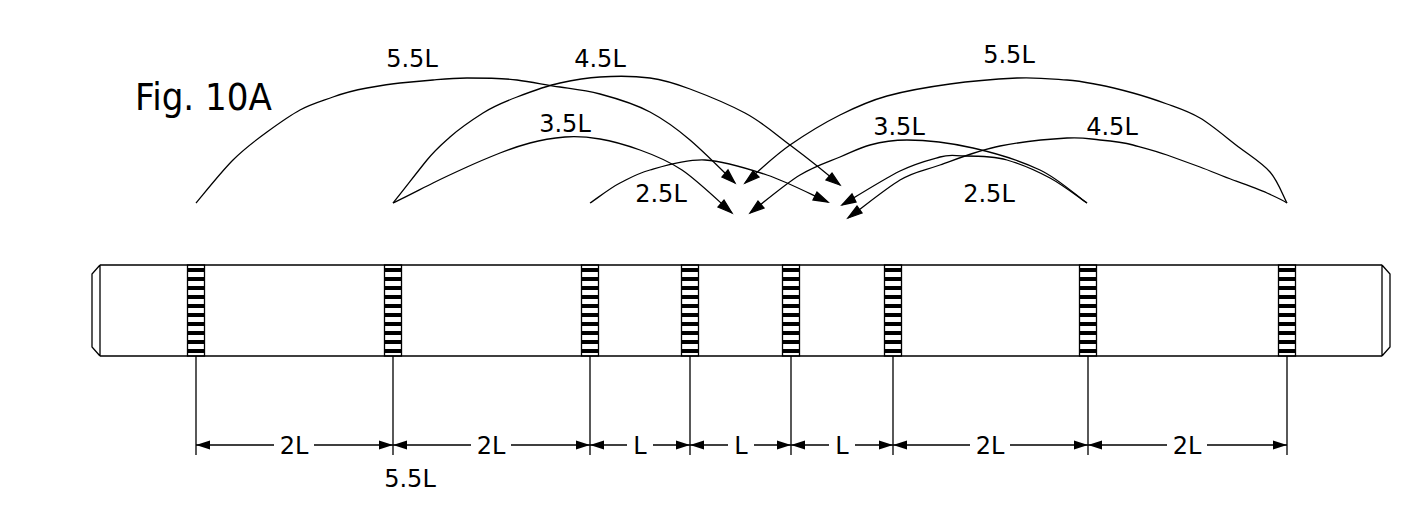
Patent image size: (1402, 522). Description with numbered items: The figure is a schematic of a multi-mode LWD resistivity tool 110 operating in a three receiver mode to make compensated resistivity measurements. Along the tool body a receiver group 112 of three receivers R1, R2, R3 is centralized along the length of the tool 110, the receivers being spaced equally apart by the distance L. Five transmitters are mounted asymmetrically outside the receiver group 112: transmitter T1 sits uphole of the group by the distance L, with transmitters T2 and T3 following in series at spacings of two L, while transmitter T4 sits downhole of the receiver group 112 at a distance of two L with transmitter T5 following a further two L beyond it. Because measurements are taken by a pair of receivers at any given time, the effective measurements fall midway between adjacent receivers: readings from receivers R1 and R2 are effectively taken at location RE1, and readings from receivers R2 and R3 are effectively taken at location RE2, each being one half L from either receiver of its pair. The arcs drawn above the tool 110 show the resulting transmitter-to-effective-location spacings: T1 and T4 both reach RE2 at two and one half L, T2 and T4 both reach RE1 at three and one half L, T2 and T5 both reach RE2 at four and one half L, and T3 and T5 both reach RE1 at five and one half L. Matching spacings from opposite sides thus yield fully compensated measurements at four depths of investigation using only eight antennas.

The multi-mode resistivity tool 110 is at (592, 458).
The receiver group 112 is at (792, 356).
The transmitter T1 is at (590, 203).
The transmitter T2 is at (393, 203).
The transmitter T3 is at (196, 203).
The transmitter T4 is at (1088, 203).
The transmitter T5 is at (1287, 203).
The receiver R1 is at (690, 205).
The receiver R2 is at (791, 205).
The receiver R3 is at (893, 205).
The effective measurement location RE1 is at (741, 237).
The effective measurement location RE2 is at (843, 237).